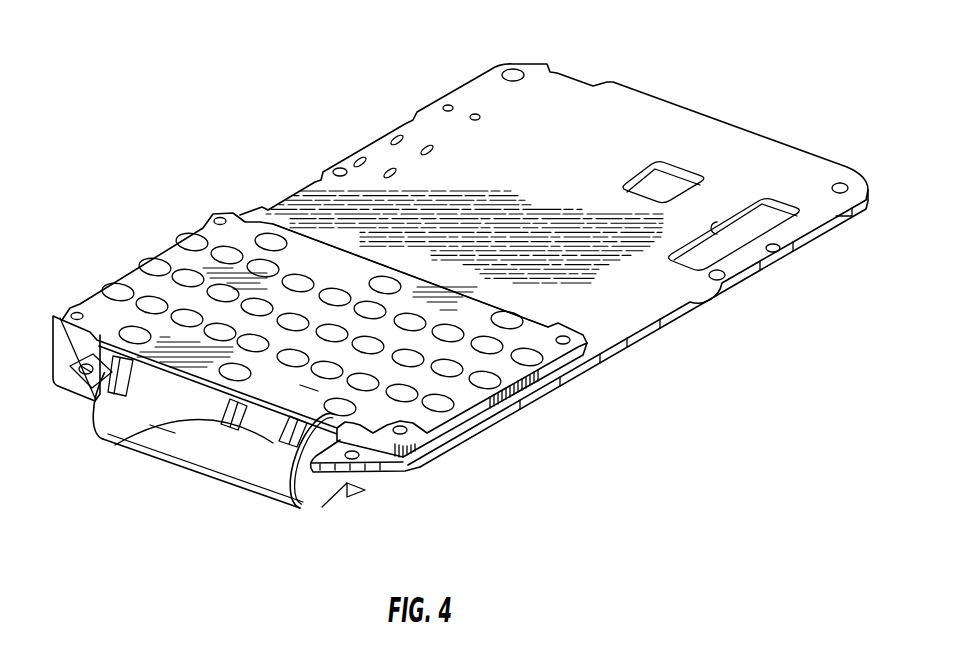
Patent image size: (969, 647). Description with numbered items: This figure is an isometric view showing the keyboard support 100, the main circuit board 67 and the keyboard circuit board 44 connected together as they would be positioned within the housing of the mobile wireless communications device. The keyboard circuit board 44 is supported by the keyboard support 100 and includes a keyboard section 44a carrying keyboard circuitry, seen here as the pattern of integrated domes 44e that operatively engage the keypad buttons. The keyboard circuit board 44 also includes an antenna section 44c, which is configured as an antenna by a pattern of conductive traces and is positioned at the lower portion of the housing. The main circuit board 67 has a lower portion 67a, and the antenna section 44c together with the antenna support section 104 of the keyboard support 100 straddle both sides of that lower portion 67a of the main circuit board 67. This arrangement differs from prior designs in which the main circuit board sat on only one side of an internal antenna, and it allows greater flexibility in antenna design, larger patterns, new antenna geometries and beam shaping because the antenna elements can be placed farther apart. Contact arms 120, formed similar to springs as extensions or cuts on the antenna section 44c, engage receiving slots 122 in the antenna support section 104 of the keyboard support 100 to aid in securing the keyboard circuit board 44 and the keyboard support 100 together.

The main circuit board 67 is at (625, 104).
The keyboard circuit board 44 is at (131, 268).
The keyboard section 44a is at (488, 307).
The integrated domes 44e is at (411, 321).
The antenna section 44c is at (241, 467).
The contact arms 120 is at (228, 432).
The receiving slots 122 is at (88, 346).
The lower portion 67a is at (372, 460).
The antenna support section 104 is at (336, 504).
The keyboard support 100 is at (486, 421).